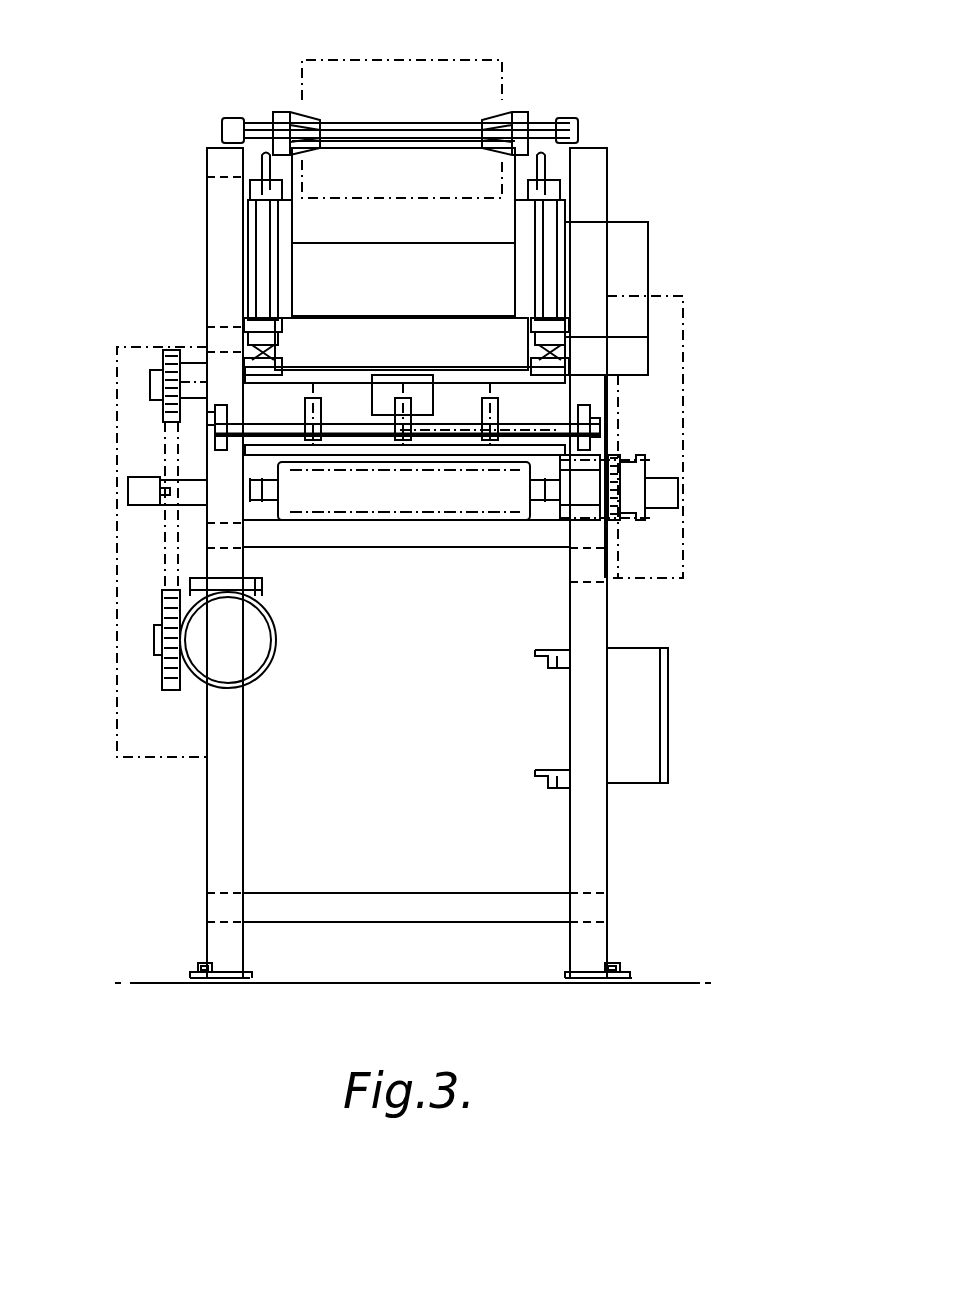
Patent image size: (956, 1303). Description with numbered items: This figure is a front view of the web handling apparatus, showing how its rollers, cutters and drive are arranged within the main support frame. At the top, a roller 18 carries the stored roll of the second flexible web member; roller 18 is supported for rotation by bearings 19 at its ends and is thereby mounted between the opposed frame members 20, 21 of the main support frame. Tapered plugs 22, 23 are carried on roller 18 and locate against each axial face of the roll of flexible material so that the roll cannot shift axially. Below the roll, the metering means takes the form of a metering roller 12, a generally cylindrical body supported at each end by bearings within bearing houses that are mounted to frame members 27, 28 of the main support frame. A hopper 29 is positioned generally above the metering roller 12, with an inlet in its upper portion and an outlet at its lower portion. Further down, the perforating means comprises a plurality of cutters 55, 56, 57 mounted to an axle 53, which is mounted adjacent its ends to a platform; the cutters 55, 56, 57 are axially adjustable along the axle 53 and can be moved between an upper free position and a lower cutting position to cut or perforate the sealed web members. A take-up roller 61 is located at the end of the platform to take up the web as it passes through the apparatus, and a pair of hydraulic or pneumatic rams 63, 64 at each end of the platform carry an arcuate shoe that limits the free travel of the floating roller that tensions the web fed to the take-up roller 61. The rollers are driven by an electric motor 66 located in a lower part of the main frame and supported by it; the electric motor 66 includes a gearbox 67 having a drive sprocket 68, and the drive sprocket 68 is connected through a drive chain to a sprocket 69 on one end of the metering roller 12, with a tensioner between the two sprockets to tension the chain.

The metering roller 12 is at (290, 330).
The roller 18 is at (403, 128).
The bearings 19 is at (232, 118).
The frame member 20 is at (207, 183).
The frame member 21 is at (603, 160).
The tapered plug 22 is at (310, 110).
The tapered plug 23 is at (497, 110).
The frame member 27 is at (258, 163).
The frame member 28 is at (545, 163).
The hopper 29 is at (418, 288).
The axle 53 is at (345, 428).
The cutter 55 is at (313, 395).
The cutter 56 is at (403, 395).
The cutter 57 is at (490, 395).
The take-up roller 61 is at (400, 485).
The hydraulic or pneumatic ram 63 is at (262, 242).
The hydraulic or pneumatic ram 64 is at (545, 242).
The electric motor 66 is at (262, 647).
The gearbox 67 is at (263, 590).
The drive sprocket 68 is at (170, 668).
The sprocket 69 is at (172, 360).